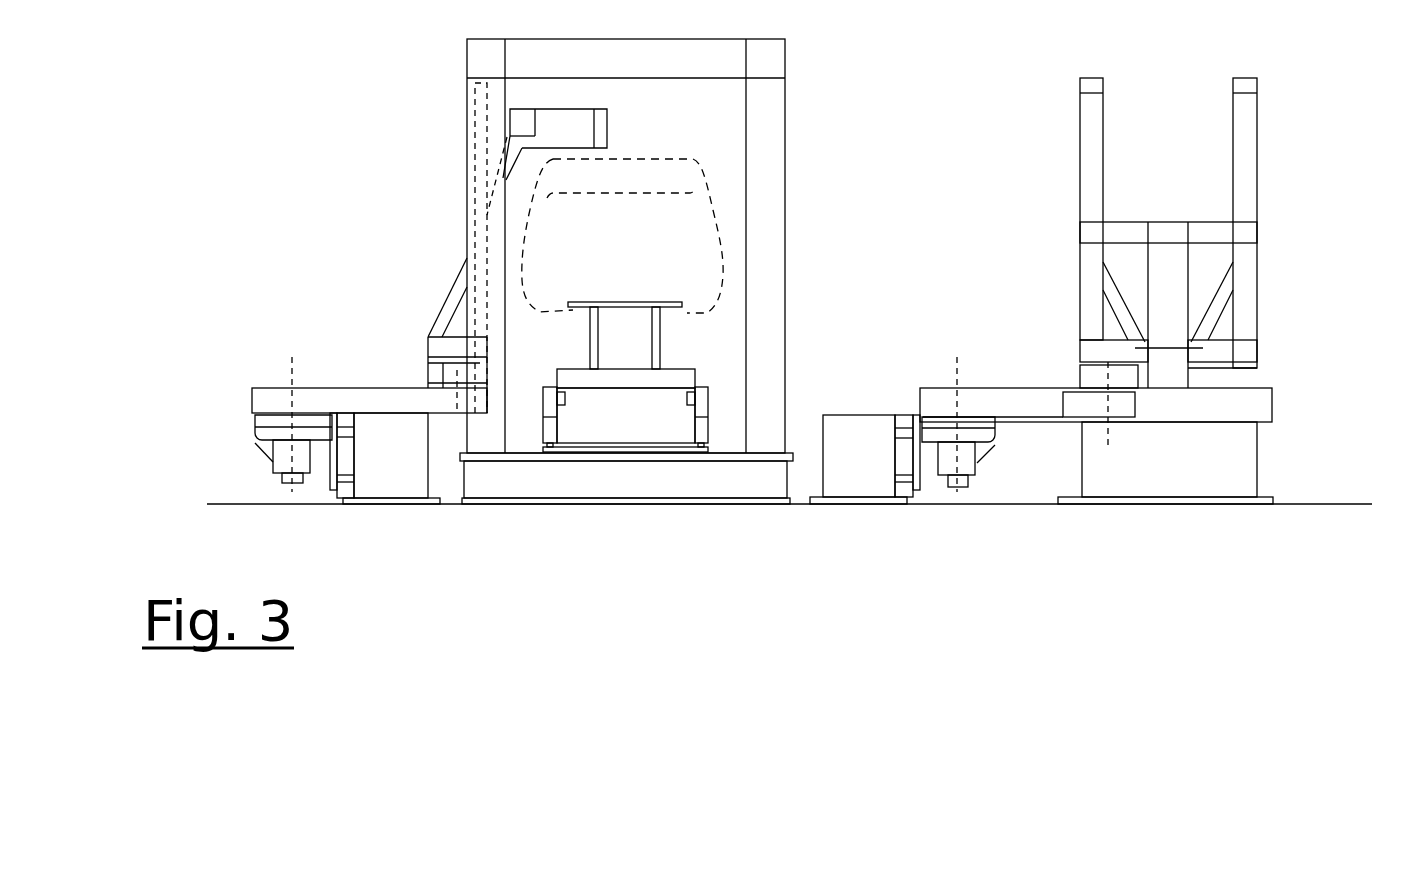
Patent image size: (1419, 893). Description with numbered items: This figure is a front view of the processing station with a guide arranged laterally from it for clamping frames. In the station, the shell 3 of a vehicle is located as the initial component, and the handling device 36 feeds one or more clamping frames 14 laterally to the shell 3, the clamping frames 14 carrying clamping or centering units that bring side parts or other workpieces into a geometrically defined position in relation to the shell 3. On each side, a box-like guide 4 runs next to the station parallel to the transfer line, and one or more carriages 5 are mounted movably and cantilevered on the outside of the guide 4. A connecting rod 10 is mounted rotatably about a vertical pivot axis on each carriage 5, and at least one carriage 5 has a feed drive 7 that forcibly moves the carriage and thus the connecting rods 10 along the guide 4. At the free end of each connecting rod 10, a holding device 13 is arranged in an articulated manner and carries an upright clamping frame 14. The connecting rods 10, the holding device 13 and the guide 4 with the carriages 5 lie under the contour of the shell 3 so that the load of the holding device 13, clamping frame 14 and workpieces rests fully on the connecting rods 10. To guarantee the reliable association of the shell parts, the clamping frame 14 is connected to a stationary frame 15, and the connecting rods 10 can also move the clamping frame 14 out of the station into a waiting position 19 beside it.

The shell 3 is at (697, 230).
The guide 4 is at (402, 458).
The carriage 5 is at (309, 430).
The feed drive 7 is at (257, 458).
The connecting rod 10 is at (272, 395).
The holding device 13 is at (438, 373).
The clamping frame 14 is at (460, 288).
The stationary frame 15 is at (770, 112).
The waiting position 19 is at (1057, 168).
The handling device 36 is at (346, 219).